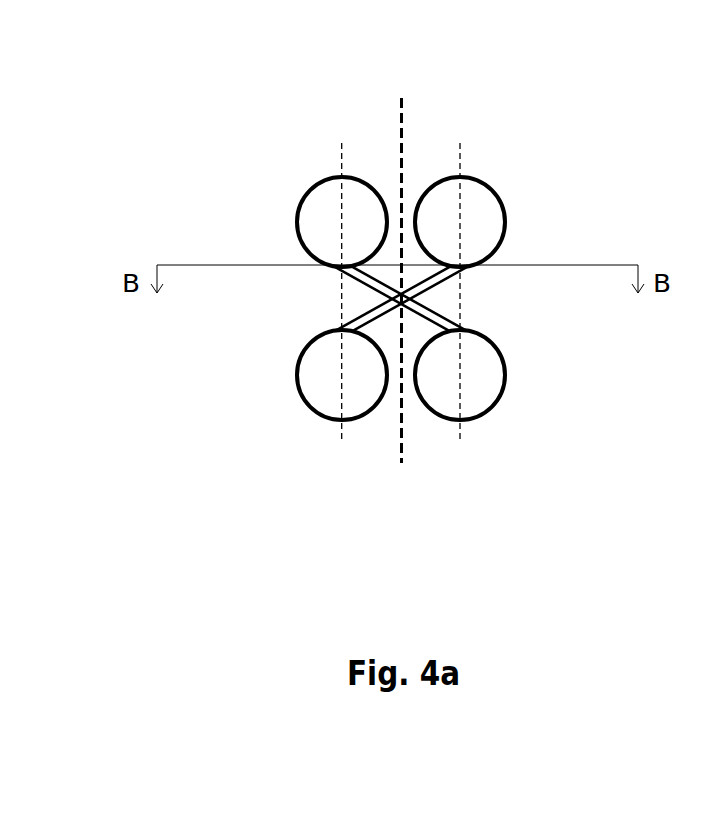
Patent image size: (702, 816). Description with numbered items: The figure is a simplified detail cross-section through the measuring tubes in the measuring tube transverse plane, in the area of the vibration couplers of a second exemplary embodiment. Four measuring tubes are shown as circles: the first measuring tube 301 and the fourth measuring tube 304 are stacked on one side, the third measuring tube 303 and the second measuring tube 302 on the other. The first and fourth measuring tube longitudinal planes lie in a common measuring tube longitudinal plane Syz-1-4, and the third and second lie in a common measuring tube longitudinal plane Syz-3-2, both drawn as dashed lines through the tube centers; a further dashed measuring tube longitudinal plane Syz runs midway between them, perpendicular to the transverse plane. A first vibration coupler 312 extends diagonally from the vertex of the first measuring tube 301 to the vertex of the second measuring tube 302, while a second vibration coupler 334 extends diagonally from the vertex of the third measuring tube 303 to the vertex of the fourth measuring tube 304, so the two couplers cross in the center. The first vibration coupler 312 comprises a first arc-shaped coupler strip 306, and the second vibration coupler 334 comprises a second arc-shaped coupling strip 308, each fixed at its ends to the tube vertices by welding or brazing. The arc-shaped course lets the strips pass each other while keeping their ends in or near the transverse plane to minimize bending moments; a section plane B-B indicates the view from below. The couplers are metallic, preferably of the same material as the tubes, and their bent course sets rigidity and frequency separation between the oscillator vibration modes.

The first measuring tube 301 is at (322, 177).
The second measuring tube 302 is at (495, 405).
The third measuring tube 303 is at (492, 188).
The fourth measuring tube 304 is at (310, 410).
The first arc-shaped coupler strip 306 is at (413, 330).
The second arc-shaped coupling strip 308 is at (413, 330).
The first vibration coupler 312 is at (333, 277).
The second vibration coupler 334 is at (447, 278).
The measuring tube longitudinal plane Syz is at (400, 110).
The common measuring tube longitudinal plane of first and fourth tubes Syz-1-4 is at (341, 442).
The common measuring tube longitudinal plane of third and second tubes Syz-3-2 is at (460, 440).